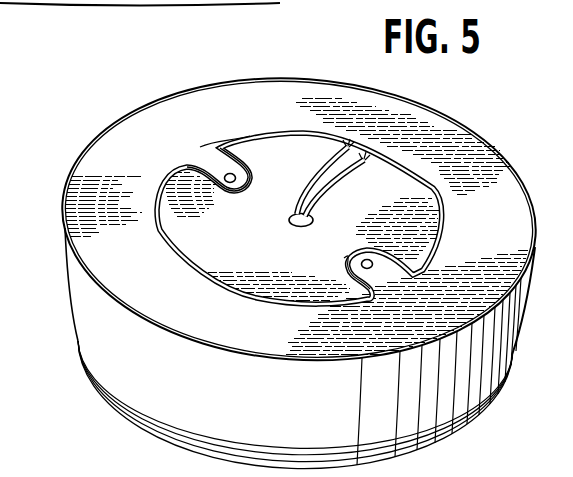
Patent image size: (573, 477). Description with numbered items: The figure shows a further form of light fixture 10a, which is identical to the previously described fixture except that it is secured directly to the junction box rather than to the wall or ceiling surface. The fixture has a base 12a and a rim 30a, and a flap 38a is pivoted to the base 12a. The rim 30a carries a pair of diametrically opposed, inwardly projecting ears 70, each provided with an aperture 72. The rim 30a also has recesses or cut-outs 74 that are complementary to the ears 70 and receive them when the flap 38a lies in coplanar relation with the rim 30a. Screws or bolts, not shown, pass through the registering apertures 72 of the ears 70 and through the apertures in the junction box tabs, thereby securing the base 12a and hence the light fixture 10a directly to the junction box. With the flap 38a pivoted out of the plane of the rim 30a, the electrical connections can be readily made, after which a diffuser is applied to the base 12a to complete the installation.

The light fixture 10a is at (165, 81).
The base 12a is at (477, 131).
The rim 30a is at (71, 250).
The flap 38a is at (279, 253).
The ears 70 is at (218, 175).
The aperture 72 is at (247, 170).
The recesses or cut-outs 74 is at (232, 162).